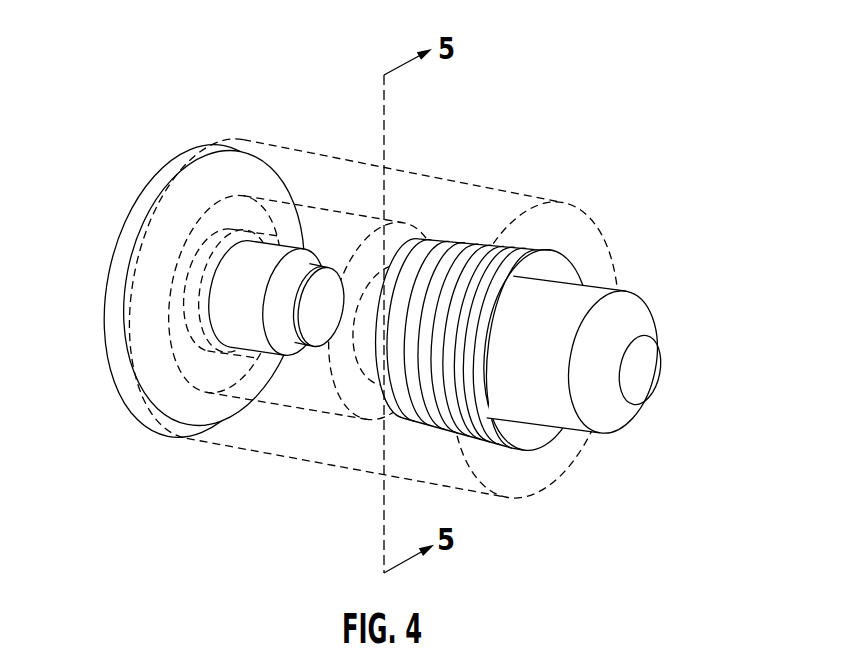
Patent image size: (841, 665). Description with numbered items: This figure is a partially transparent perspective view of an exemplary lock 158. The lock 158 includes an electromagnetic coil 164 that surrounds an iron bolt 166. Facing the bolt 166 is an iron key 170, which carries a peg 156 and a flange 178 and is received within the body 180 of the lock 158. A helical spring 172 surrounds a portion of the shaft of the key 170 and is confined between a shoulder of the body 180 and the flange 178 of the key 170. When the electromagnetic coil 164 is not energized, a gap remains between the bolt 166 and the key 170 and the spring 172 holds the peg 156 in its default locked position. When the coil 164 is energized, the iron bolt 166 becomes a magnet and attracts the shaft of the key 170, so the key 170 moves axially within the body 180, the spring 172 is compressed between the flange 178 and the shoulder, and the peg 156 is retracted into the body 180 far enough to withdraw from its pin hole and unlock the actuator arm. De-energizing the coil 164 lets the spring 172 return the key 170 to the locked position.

The peg 156 is at (587, 297).
The lock 158 is at (168, 71).
The electromagnetic coil 164 is at (273, 250).
The iron bolt 166 is at (318, 267).
The iron key 170 is at (524, 410).
The helical spring 172 is at (443, 237).
The flange 178 is at (558, 267).
The body 180 is at (425, 160).